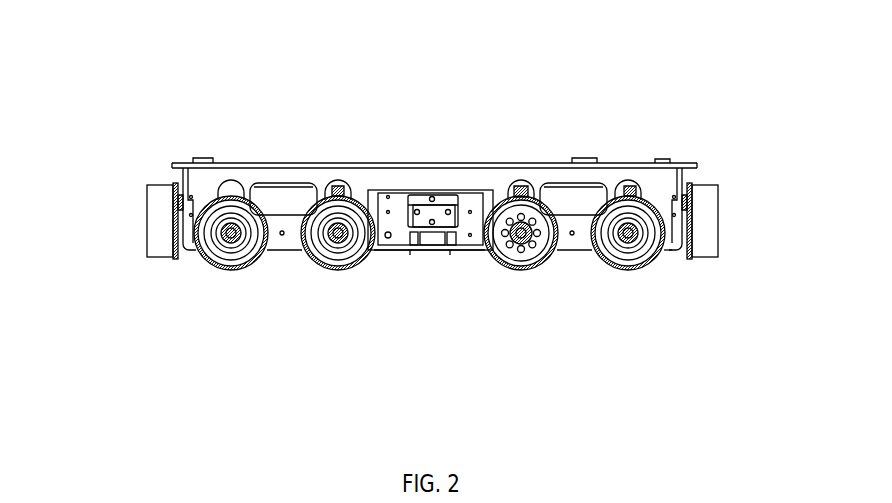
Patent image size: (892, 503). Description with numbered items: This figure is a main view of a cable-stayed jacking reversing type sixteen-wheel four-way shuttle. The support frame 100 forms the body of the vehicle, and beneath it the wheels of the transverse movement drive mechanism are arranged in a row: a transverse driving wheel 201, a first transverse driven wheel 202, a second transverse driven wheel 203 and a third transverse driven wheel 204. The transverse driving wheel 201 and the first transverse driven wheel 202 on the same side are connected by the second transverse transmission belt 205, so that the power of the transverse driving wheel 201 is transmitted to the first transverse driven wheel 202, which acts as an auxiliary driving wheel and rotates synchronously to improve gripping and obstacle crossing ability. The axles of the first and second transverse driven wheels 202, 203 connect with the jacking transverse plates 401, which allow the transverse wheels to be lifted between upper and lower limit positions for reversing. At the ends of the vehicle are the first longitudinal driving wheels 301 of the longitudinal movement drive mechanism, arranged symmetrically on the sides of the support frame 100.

The support frame 100 is at (401, 190).
The transverse driving wheel 201 is at (630, 196).
The first transverse driven wheel 202 is at (503, 186).
The second transverse driven wheel 203 is at (315, 262).
The third transverse driven wheel 204 is at (207, 262).
The second transverse transmission belt 205 is at (569, 262).
The first longitudinal driving wheel 301 is at (157, 222).
The jacking transverse plate 401 is at (283, 190).